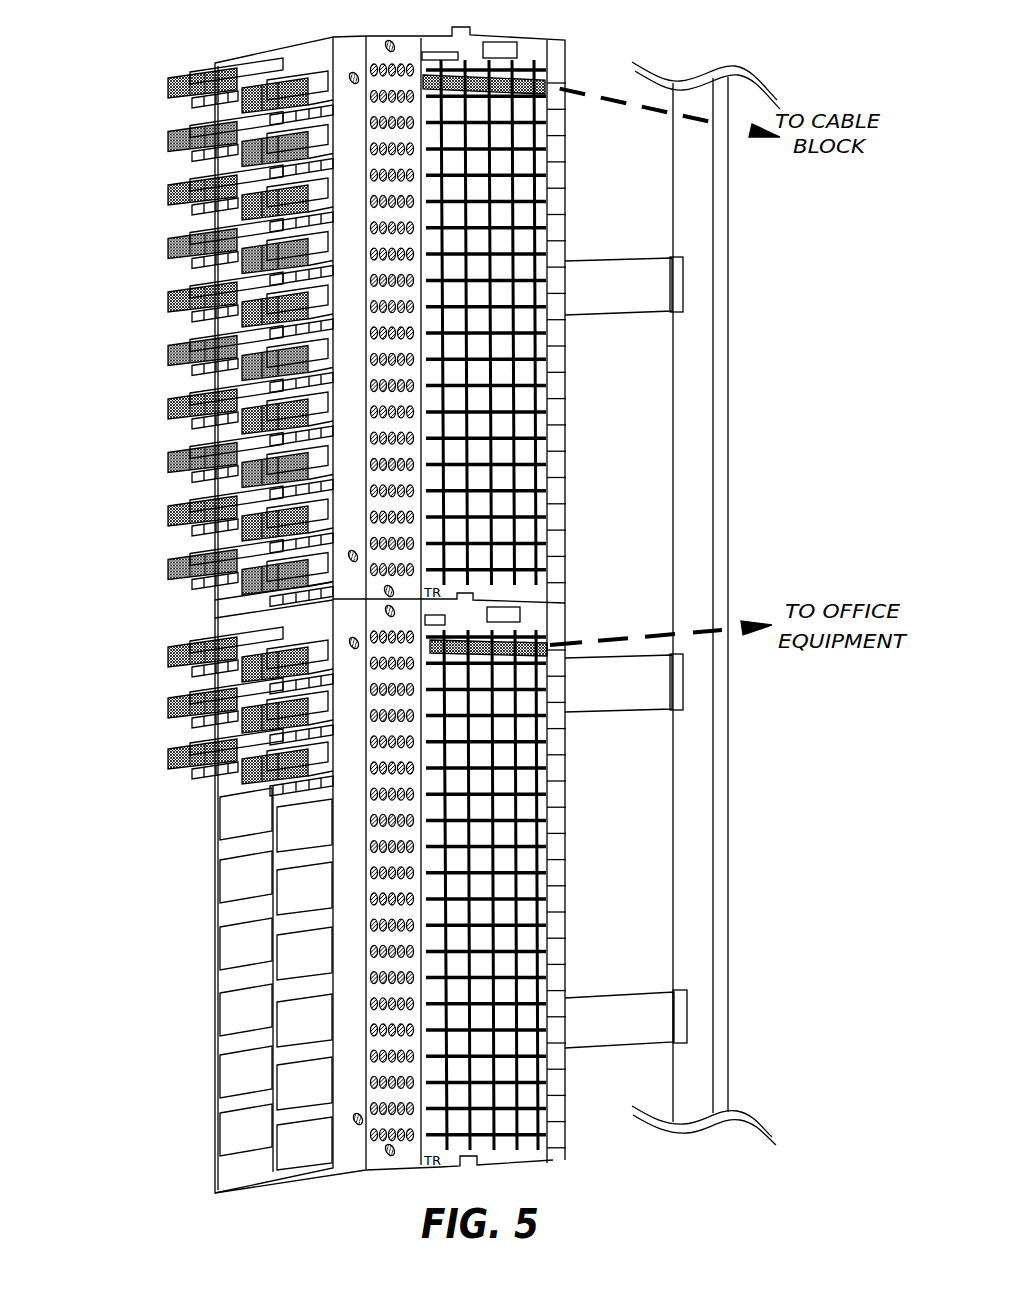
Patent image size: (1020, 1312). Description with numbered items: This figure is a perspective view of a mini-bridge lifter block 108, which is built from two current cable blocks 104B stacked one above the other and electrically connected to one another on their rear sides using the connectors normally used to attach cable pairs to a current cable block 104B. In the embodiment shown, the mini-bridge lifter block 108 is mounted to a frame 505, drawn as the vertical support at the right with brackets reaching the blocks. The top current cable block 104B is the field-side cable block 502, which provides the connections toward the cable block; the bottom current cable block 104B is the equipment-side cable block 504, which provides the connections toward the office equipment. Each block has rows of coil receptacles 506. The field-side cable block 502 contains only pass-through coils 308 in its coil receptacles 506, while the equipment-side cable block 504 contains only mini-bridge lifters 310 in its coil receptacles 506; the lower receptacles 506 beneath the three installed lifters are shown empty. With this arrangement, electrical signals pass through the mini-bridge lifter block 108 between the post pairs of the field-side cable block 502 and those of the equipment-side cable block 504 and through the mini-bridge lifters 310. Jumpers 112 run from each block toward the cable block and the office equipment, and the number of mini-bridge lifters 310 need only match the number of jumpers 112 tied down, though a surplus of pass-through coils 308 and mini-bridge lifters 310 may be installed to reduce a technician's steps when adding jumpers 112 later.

The mini-bridge lifter block 108 is at (137, 87).
The current cable block 104B is at (301, 68).
The jumpers 112 is at (562, 88).
The pass-through coils 308 is at (160, 337).
The mini-bridge lifters 310 is at (160, 745).
The field-side cable block 502 is at (307, 330).
The equipment-side cable block 504 is at (308, 909).
The frame 505 is at (690, 298).
The coil receptacles 506 is at (247, 877).